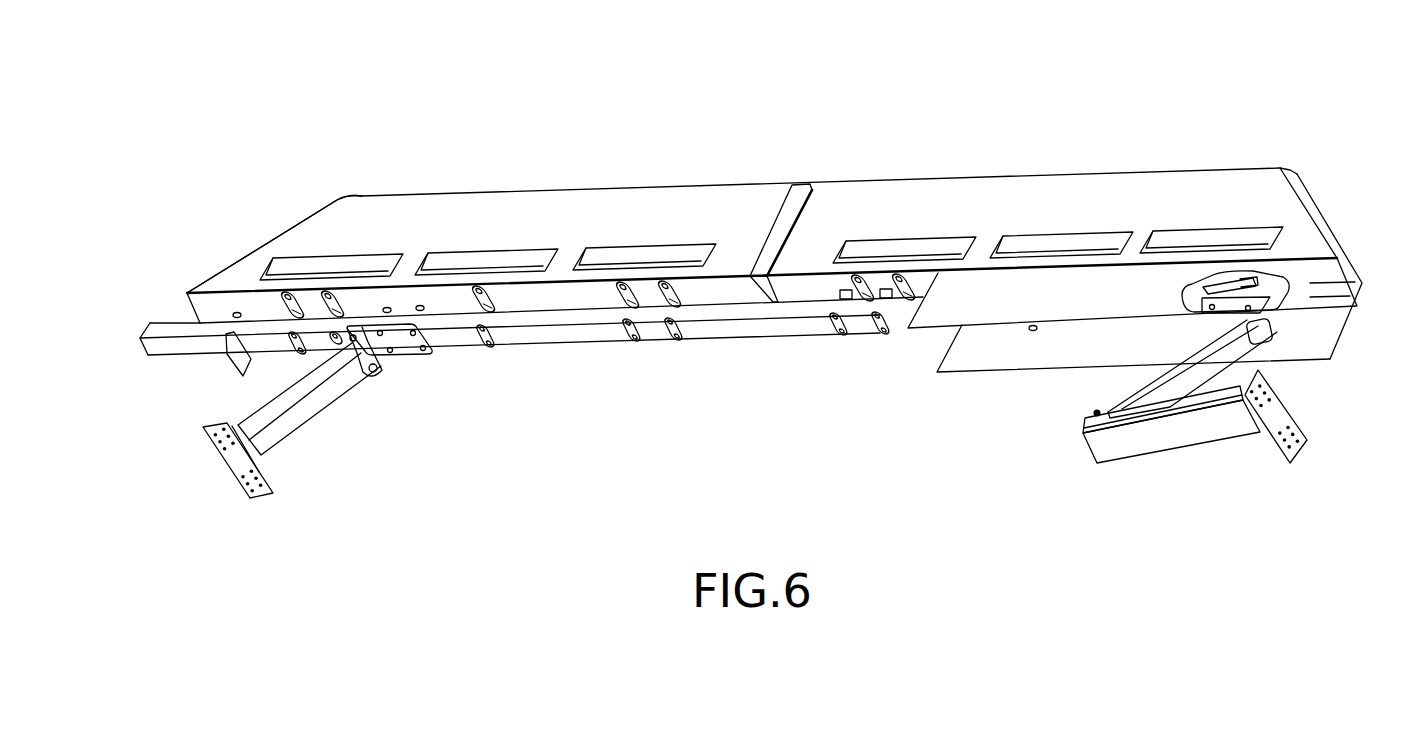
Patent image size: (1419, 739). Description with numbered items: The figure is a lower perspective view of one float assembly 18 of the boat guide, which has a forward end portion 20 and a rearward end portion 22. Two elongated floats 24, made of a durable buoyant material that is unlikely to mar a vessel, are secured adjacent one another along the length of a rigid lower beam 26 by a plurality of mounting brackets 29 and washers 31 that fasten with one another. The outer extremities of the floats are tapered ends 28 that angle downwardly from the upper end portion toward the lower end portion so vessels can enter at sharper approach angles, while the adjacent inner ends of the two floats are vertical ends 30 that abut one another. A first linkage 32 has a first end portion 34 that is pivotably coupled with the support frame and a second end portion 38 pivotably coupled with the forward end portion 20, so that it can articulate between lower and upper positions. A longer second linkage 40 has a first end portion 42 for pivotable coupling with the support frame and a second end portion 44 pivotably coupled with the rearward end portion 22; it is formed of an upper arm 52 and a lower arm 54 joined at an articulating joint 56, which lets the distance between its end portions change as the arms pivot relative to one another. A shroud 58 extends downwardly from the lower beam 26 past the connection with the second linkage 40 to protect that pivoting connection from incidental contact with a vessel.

The float assembly 18 is at (1081, 98).
The forward end portion 20 is at (145, 301).
The rearward end portion 22 is at (1368, 240).
The elongated float 24 is at (560, 205).
The rigid lower beam 26 is at (505, 316).
The tapered end 28 is at (260, 232).
The mounting bracket 29 is at (668, 288).
The vertical end 30 is at (820, 208).
The washer 31 is at (668, 342).
The first linkage 32 is at (320, 410).
The first end portion of first linkage 34 is at (402, 376).
The second end portion of first linkage 38 is at (218, 475).
The second linkage 40 is at (1194, 411).
The first end portion of second linkage 42 is at (1308, 399).
The second end portion of second linkage 44 is at (1310, 334).
The upper arm 52 is at (1162, 360).
The lower arm 54 is at (1165, 438).
The articulating joint 56 is at (1097, 413).
The shroud 58 is at (983, 353).